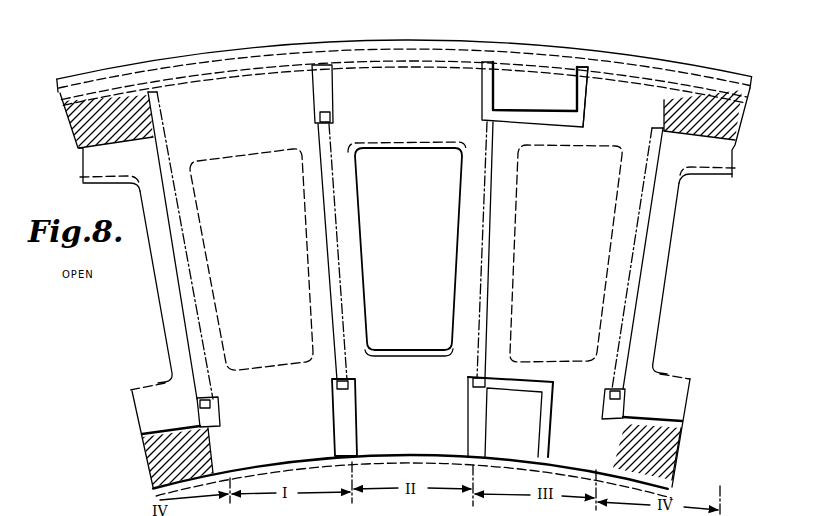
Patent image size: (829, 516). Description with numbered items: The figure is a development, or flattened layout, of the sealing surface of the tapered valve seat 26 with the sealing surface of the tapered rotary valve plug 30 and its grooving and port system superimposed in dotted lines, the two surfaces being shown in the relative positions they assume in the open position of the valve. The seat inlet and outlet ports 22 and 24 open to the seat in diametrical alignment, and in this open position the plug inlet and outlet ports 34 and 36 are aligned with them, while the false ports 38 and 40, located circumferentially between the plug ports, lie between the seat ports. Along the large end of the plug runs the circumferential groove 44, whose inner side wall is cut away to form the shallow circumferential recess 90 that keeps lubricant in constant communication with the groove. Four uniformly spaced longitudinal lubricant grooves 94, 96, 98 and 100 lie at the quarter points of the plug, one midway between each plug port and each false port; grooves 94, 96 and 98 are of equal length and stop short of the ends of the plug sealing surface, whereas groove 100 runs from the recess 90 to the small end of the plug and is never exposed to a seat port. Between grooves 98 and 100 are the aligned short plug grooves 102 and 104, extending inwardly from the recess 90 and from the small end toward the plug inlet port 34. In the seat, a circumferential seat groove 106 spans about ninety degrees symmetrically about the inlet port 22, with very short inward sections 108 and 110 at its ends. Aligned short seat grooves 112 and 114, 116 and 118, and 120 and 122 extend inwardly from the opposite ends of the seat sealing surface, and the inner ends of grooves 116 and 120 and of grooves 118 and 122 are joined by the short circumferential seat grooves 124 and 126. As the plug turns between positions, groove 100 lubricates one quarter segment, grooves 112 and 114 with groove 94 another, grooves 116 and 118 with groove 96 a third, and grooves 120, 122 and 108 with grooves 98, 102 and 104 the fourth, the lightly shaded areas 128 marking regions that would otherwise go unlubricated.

The inlet port 22 is at (163, 322).
The outlet port 24 is at (360, 226).
The tapered valve seat 26 is at (190, 96).
The tapered rotary valve plug 30 is at (157, 500).
The plug inlet port 34 is at (82, 185).
The plug outlet port 36 is at (382, 144).
The false port 38 is at (515, 213).
The false port 40 is at (198, 220).
The circumferential groove 44 is at (302, 50).
The circumferential recess 90 is at (438, 62).
The lubricant groove 94 is at (342, 271).
The lubricant groove 96 is at (485, 256).
The lubricant groove 98 is at (637, 274).
The lubricant groove 100 is at (183, 258).
The short groove 102 is at (80, 147).
The short groove 104 is at (152, 459).
The seat groove 106 is at (163, 429).
The inwardly extending section 108 is at (605, 410).
The inwardly extending section 110 is at (218, 405).
The short seat groove 112 is at (333, 92).
The short seat groove 114 is at (345, 421).
The short seat groove 116 is at (483, 96).
The short seat groove 118 is at (480, 418).
The short seat groove 120 is at (588, 96).
The short seat groove 122 is at (542, 433).
The circumferentially extending seat groove 124 is at (537, 104).
The circumferentially extending seat groove 126 is at (513, 383).
The lightly shaded area 128 is at (110, 115).